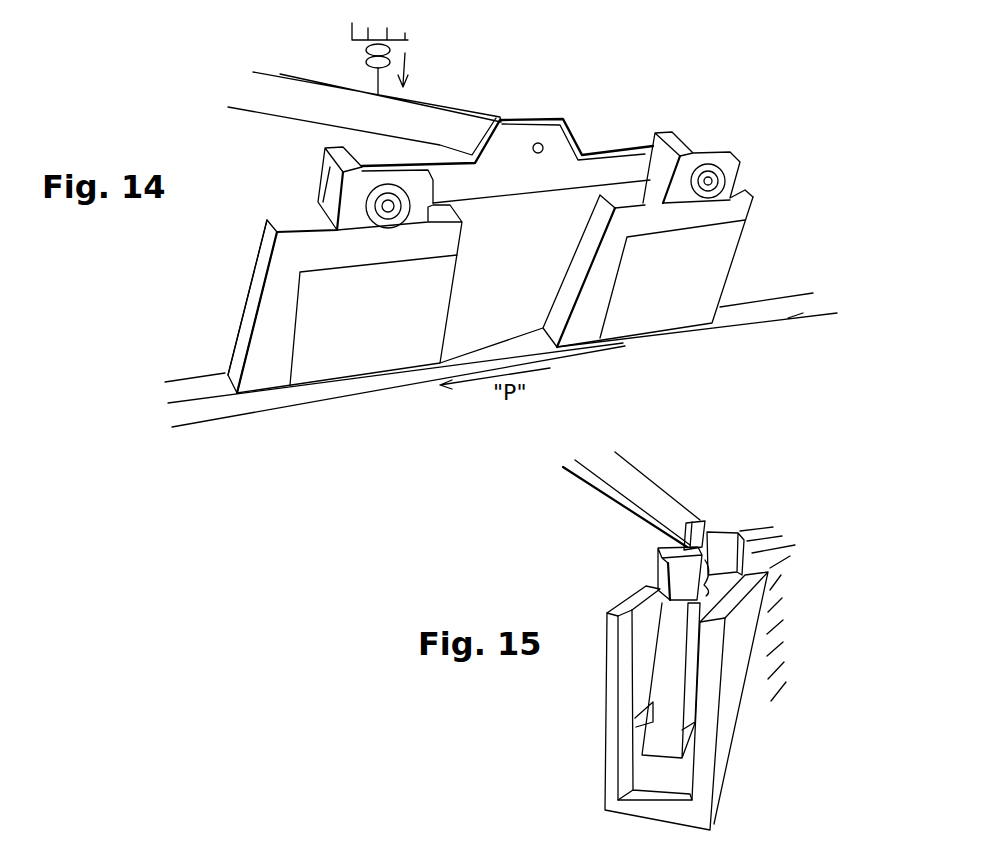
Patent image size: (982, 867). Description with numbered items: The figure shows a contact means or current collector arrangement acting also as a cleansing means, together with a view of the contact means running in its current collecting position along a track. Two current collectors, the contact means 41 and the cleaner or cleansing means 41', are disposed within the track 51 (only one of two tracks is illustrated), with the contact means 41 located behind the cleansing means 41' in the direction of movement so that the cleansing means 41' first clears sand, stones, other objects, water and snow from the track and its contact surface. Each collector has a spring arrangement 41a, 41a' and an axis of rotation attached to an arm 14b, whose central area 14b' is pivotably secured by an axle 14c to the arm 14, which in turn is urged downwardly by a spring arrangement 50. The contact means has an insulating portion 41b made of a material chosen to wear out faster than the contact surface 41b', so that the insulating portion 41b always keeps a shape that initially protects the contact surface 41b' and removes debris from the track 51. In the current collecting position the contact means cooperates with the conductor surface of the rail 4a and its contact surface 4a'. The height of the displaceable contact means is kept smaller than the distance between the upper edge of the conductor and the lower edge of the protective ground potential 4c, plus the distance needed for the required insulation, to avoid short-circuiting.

In FIG. 14, the arm 14 is at (475, 103).
In FIG. 15, the arm 14 is at (633, 498).
In FIG. 14, the arm 14b is at (533, 121).
In FIG. 14, the axle 14c is at (544, 145).
In FIG. 14, the central area 14b' is at (541, 212).
In FIG. 14, the contact means 41 is at (315, 270).
In FIG. 15, the contact means 41 is at (739, 680).
In FIG. 14, the spring arrangement 41a is at (312, 203).
In FIG. 14, the spring arrangement 41a' is at (758, 154).
In FIG. 14, the cleansing means 41' is at (688, 239).
In FIG. 14, the insulating portion 41b is at (207, 297).
In FIG. 14, the contact surface 41b' is at (373, 320).
In FIG. 14, the rail 4a is at (502, 393).
In FIG. 15, the rail 4a is at (654, 701).
In FIG. 14, the contact surface 4a' is at (496, 320).
In FIG. 15, the protective ground potential 4c is at (773, 563).
In FIG. 14, the spring arrangement 50 is at (406, 58).
In FIG. 14, the track 51 is at (491, 330).